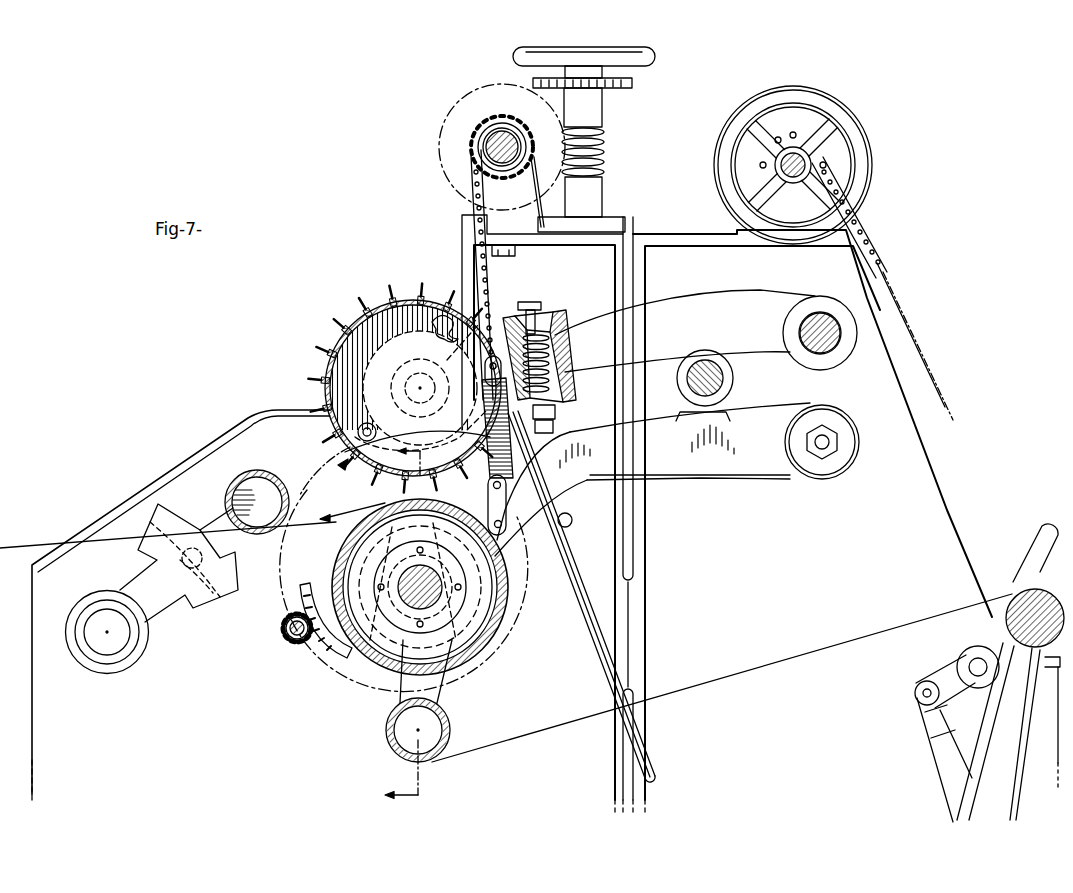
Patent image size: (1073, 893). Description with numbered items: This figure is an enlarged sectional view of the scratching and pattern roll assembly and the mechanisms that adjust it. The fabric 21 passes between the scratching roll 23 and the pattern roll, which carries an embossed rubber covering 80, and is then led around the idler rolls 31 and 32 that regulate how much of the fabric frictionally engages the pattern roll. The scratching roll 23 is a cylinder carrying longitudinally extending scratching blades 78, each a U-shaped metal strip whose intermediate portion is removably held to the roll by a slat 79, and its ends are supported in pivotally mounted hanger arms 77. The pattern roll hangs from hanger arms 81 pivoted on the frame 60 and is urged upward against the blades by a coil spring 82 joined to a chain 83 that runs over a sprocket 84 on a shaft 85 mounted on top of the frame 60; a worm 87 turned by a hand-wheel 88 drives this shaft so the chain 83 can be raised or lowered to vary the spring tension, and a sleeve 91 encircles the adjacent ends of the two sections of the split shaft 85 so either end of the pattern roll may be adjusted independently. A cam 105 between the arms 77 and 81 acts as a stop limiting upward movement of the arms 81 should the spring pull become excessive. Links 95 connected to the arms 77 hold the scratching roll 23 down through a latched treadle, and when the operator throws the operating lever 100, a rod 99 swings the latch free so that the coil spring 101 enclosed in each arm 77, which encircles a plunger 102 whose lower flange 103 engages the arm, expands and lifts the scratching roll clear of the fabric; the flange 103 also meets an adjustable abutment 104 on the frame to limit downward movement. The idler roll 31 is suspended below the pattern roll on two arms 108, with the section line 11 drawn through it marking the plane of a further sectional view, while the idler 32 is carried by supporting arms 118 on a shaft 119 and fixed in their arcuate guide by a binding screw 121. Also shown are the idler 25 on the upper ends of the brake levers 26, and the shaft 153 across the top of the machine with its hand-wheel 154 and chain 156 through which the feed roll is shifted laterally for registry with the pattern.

The hand-wheel 88 is at (650, 66).
The worm 87 is at (604, 143).
The sleeve 91 is at (503, 128).
The sprocket 84 is at (506, 174).
The shaft 85 is at (472, 152).
The chain 83 is at (488, 272).
The hand-wheel 154 is at (853, 132).
The shaft 153 is at (800, 156).
The chain 156 is at (886, 266).
The frame 60 is at (675, 243).
The scratching blades 78 is at (395, 296).
The slat 79 is at (355, 302).
The section line 11 is at (417, 632).
The coil spring 82 is at (480, 390).
The coil spring 101 is at (578, 352).
The plunger 102 is at (541, 305).
The flange 103 is at (558, 406).
The adjustable abutment 104 is at (556, 424).
The hanger arms 77 is at (724, 297).
The cam 105 is at (700, 356).
The hanger arms 81 is at (712, 470).
The links 95 is at (578, 598).
The idler roll 32 is at (262, 470).
The scratching roll 23 is at (320, 388).
The fabric 21 is at (740, 661).
The supporting arms 118 is at (167, 605).
The binding screw 121 is at (205, 560).
The shaft 119 is at (107, 645).
The embossed rubber covering 80 is at (338, 565).
The arms 108 is at (445, 700).
The idler roll 31 is at (436, 727).
The operating lever 100 is at (1037, 545).
The idler 25 is at (1008, 625).
The rod 99 is at (952, 755).
The levers 26 is at (1012, 803).